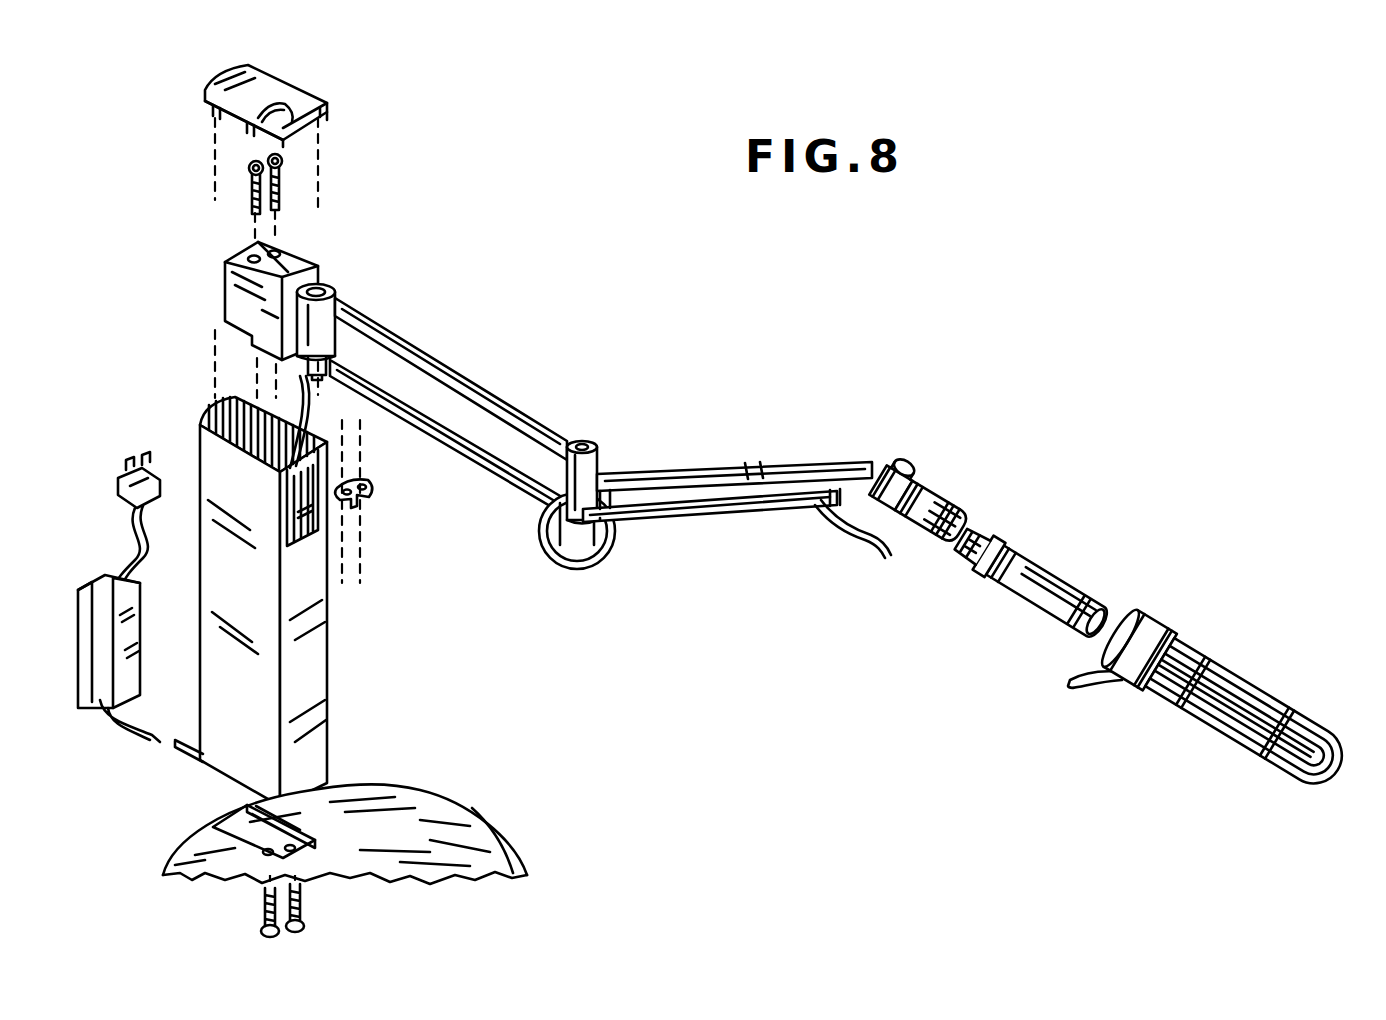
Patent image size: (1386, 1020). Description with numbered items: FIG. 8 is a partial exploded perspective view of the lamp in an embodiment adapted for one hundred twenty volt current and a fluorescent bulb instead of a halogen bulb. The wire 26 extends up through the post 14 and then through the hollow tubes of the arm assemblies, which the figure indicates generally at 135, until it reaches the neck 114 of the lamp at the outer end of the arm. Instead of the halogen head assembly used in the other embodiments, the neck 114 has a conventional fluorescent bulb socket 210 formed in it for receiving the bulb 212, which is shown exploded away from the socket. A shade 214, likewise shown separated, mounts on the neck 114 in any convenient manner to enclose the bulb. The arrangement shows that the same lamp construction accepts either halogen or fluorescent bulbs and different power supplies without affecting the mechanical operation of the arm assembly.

The post 14 is at (318, 682).
The wire 26 is at (130, 737).
The neck 114 is at (898, 474).
The articulated arm 135 is at (856, 625).
The fluorescent bulb socket 210 is at (942, 503).
The bulb 212 is at (1073, 592).
The shade 214 is at (1157, 630).